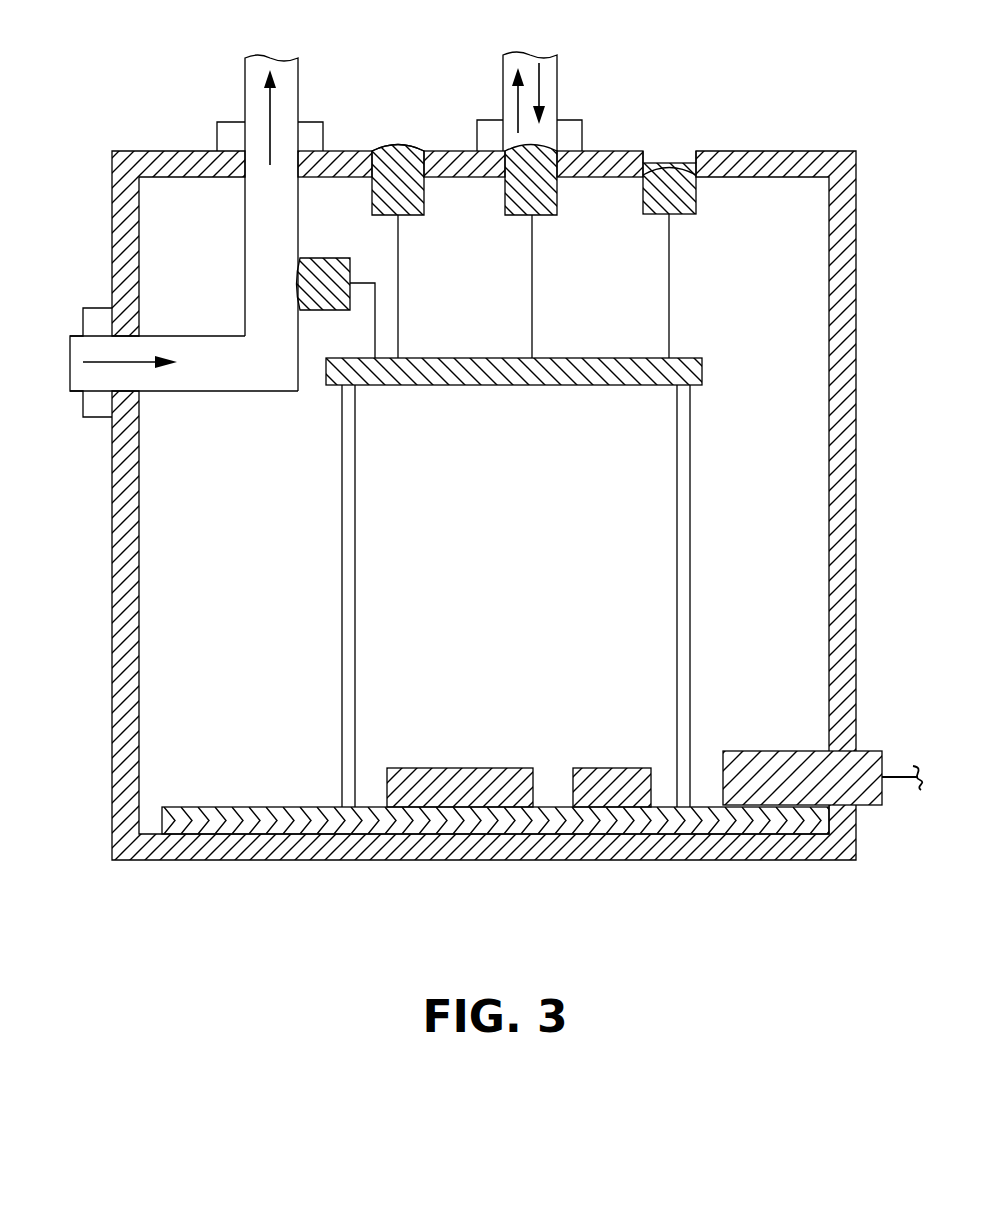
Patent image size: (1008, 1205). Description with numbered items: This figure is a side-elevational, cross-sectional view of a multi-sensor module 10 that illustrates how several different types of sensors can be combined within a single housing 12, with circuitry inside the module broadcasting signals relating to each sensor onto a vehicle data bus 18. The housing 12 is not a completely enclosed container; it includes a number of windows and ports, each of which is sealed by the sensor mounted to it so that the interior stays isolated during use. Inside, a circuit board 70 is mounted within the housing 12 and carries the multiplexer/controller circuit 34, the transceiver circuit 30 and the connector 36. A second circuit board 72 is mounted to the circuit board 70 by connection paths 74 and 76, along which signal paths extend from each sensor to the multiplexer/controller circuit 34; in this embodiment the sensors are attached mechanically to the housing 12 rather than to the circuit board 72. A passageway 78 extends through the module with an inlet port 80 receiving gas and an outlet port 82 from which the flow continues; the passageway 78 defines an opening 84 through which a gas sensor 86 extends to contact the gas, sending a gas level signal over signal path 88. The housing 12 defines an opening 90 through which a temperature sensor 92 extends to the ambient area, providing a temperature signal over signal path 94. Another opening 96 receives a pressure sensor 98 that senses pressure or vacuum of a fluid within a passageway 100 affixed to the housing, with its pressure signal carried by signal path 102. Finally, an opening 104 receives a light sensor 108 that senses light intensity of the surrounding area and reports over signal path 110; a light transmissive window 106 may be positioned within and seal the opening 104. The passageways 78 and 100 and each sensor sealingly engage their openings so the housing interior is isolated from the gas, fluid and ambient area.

The multi-sensor module 10 is at (176, 910).
The housing 12 is at (112, 800).
The vehicle data bus 18 is at (888, 770).
The transceiver circuit 30 is at (607, 768).
The multiplexer/controller circuit 34 is at (460, 768).
The connector 36 is at (783, 751).
The circuit board 70 is at (222, 807).
The circuit board 72 is at (507, 386).
The connection path 74 is at (355, 510).
The connection path 76 is at (677, 523).
The passageway 78 is at (178, 336).
The inlet port 80 is at (70, 338).
The outlet port 82 is at (265, 58).
The opening 84 is at (298, 262).
The gas sensor 86 is at (318, 258).
The signal path 88 is at (363, 283).
The opening 90 is at (372, 150).
The temperature sensor 92 is at (424, 205).
The signal path 94 is at (398, 278).
The opening 96 is at (558, 128).
The pressure sensor 98 is at (557, 205).
The passageway 100 is at (527, 55).
The signal path 102 is at (532, 276).
The opening 104 is at (696, 150).
The light transmissive window 106 is at (658, 163).
The light sensor 108 is at (696, 195).
The signal path 110 is at (669, 276).